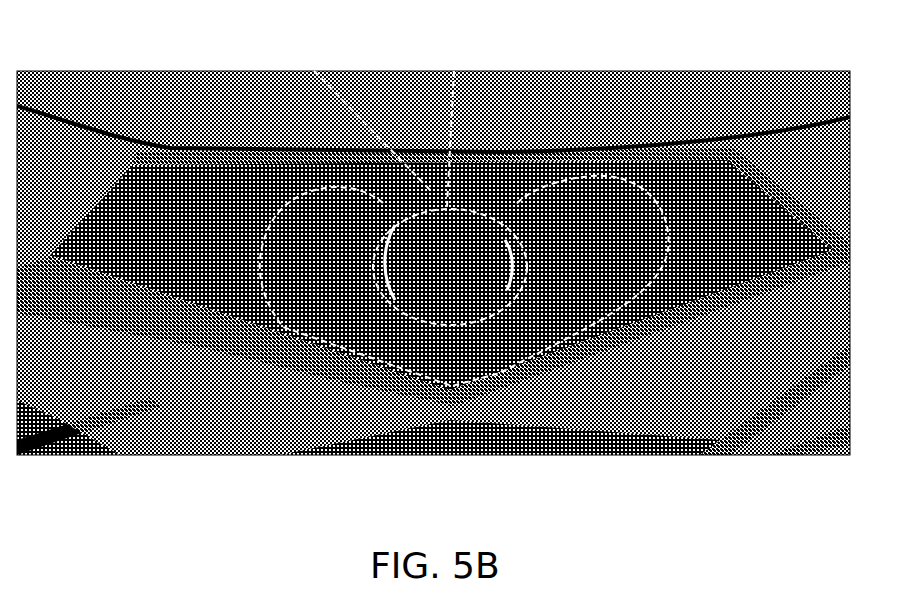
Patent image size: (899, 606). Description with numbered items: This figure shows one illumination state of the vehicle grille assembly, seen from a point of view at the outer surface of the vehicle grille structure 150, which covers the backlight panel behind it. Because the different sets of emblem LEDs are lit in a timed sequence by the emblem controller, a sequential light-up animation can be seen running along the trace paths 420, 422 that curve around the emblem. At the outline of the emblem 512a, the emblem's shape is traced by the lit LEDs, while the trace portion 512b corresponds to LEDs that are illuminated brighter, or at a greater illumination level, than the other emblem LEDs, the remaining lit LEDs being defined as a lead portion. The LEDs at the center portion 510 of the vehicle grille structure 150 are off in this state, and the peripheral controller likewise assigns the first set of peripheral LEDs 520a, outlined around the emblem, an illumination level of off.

The vehicle grille structure 150 is at (100, 140).
The center portion 510 is at (462, 292).
The outline of the emblem 512a is at (314, 71).
The trace portion 512b is at (454, 71).
The first set of peripheral LEDs 520a is at (600, 176).
The trace path 420 is at (358, 205).
The trace path 422 is at (502, 190).